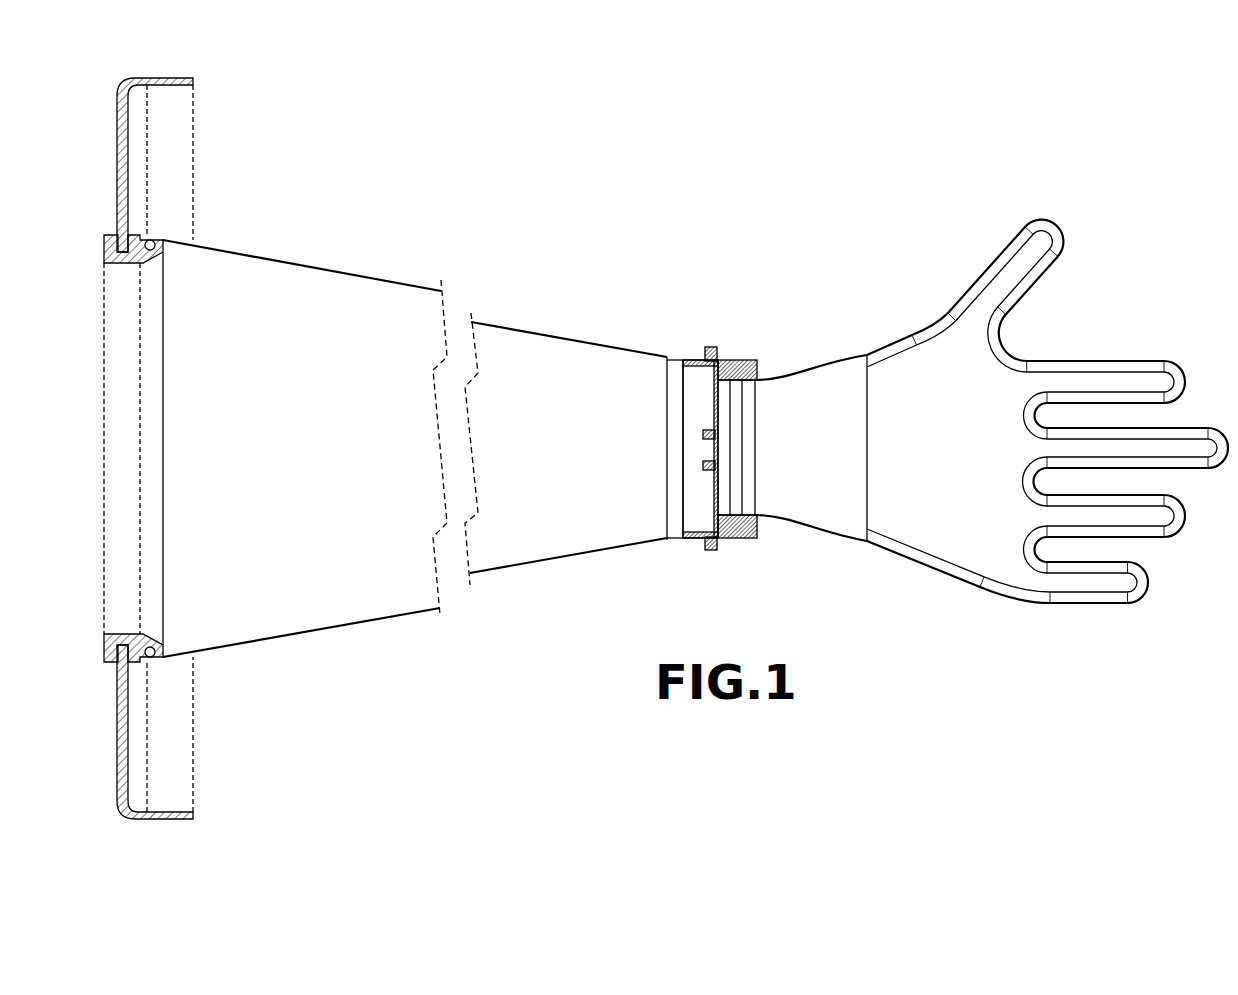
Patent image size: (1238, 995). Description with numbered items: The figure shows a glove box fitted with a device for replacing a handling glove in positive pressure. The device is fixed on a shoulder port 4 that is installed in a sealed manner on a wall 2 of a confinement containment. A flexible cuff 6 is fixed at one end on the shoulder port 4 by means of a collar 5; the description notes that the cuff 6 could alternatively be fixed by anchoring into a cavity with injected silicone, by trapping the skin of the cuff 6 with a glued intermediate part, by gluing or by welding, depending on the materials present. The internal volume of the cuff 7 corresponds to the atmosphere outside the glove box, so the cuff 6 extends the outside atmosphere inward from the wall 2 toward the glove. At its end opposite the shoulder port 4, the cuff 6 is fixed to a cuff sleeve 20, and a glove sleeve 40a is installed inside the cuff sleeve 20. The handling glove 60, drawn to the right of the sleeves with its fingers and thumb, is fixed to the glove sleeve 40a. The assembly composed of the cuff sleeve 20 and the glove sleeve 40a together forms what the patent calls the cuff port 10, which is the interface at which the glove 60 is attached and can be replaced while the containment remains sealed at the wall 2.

The wall 2 is at (118, 155).
The shoulder port 4 is at (135, 265).
The collar 5 is at (157, 242).
The cuff 6 is at (415, 283).
The internal volume of the cuff 7 is at (588, 403).
The cuff port 10 is at (772, 373).
The cuff sleeve 20 is at (730, 375).
The glove sleeve 40a is at (735, 363).
The glove 60 is at (950, 404).